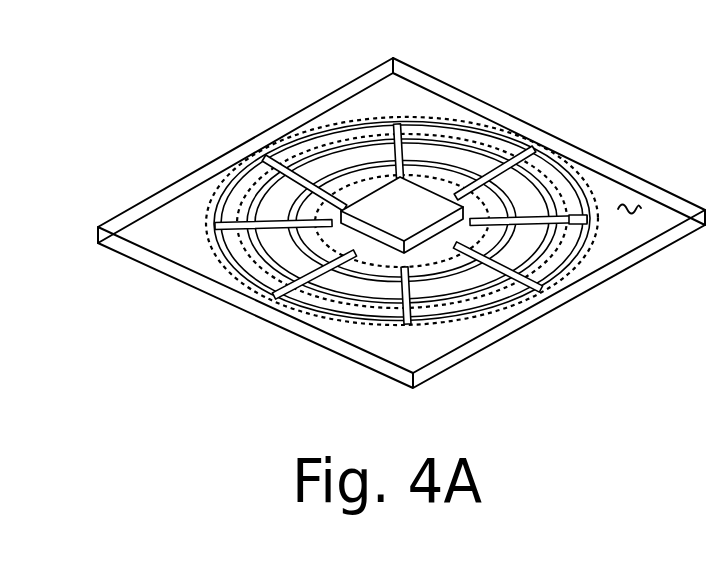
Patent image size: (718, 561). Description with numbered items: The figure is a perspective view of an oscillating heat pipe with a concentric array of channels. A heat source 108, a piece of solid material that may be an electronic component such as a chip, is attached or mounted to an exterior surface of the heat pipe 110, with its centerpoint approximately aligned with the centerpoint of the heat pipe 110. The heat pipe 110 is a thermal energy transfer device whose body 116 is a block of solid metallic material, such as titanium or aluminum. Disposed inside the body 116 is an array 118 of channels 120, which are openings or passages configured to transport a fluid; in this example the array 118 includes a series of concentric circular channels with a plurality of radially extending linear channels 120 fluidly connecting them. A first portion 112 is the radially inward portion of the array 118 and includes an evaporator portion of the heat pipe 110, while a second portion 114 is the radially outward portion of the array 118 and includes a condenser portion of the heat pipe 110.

The heat source 108 is at (513, 284).
The heat pipe 110 is at (170, 180).
The first portion 112 is at (430, 225).
The second portion 114 is at (254, 270).
The body 116 is at (640, 205).
The array 118 is at (560, 160).
The channels 120 is at (338, 175).